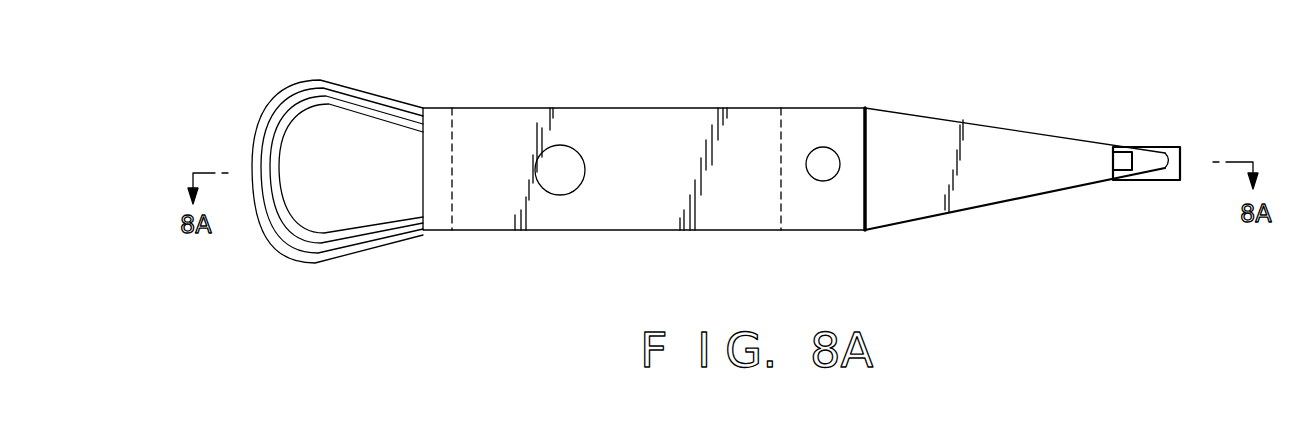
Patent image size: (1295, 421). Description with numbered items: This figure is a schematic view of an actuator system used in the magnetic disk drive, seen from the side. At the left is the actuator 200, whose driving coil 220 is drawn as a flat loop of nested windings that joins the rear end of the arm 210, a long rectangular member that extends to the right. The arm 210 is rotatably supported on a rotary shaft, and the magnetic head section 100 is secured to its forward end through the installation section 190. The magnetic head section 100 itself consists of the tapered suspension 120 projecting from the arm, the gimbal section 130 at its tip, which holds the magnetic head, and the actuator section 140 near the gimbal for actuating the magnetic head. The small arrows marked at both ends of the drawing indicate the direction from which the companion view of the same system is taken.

The magnetic head section 100 is at (1010, 114).
The suspension 120 is at (908, 127).
The gimbal section 130 is at (1165, 147).
The actuator section 140 is at (1117, 143).
The installation section 190 is at (807, 113).
The actuator 200 is at (507, 76).
The arm 210 is at (631, 115).
The driving coil 220 is at (285, 100).